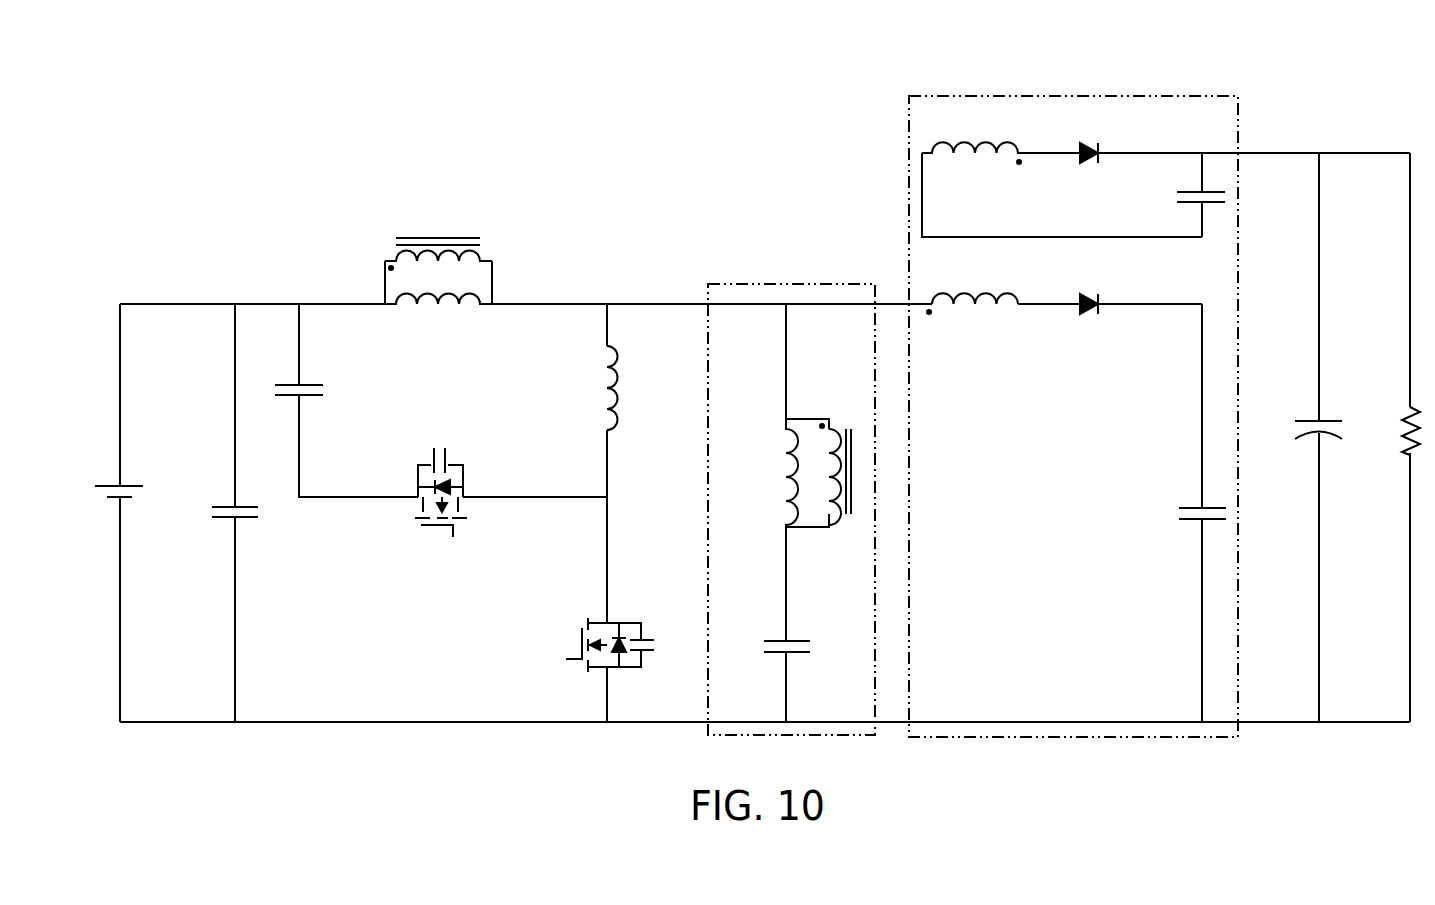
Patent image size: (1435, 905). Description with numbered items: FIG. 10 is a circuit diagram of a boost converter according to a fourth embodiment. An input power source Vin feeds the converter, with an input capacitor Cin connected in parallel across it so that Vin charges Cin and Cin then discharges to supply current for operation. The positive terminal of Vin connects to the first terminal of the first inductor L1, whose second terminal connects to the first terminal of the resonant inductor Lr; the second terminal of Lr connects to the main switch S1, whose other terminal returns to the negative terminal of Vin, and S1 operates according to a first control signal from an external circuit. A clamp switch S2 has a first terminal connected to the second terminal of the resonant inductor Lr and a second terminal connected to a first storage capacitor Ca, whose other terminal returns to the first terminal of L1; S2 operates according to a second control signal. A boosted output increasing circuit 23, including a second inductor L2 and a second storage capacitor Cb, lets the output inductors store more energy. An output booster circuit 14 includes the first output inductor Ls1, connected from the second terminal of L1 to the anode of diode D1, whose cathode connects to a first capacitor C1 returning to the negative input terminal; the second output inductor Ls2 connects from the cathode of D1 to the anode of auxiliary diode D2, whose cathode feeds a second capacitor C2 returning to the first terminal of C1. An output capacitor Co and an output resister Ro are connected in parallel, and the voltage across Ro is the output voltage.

The output booster circuit 14 is at (1046, 93).
The boosted output increasing circuit 23 is at (795, 283).
The input power source Vin is at (95, 491).
The input capacitor Cin is at (210, 510).
The first storage capacitor Ca is at (317, 389).
The first inductor L1 is at (438, 289).
The resonant inductor Lr is at (629, 388).
The main switch S1 is at (592, 645).
The clamp switch S2 is at (458, 492).
The second inductor L2 is at (800, 473).
The second storage capacitor Cb is at (768, 648).
The first output inductor Ls1 is at (972, 285).
The second output inductor Ls2 is at (1062, 171).
The diode D1 is at (1094, 285).
The auxiliary diode D2 is at (1092, 134).
The first capacitor C1 is at (1183, 516).
The second capacitor C2 is at (1182, 199).
The output capacitor Co is at (1299, 431).
The output resister Ro is at (1392, 431).